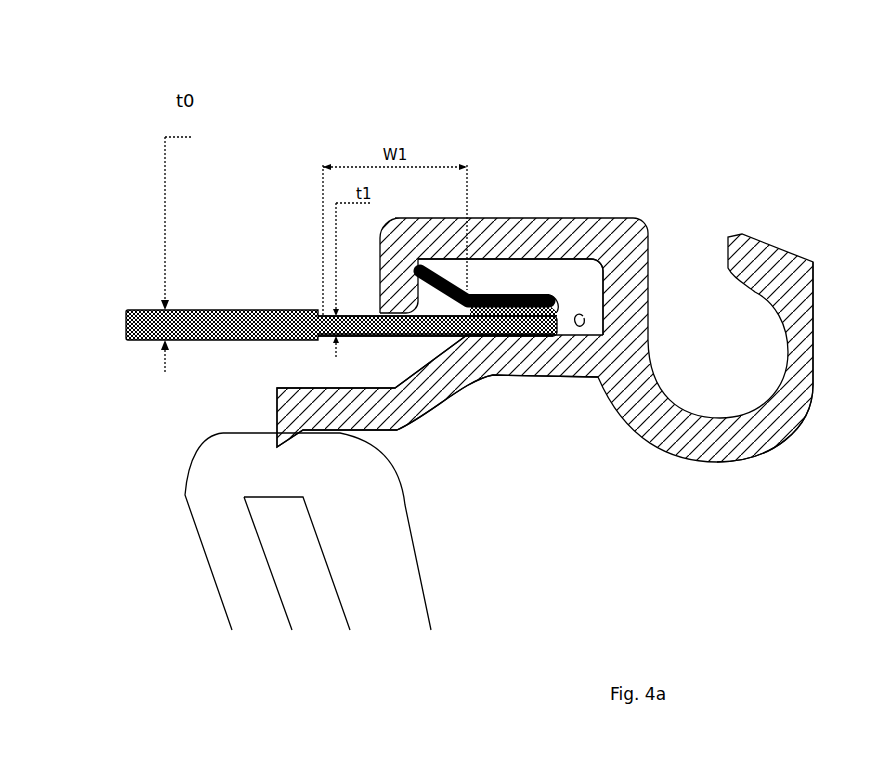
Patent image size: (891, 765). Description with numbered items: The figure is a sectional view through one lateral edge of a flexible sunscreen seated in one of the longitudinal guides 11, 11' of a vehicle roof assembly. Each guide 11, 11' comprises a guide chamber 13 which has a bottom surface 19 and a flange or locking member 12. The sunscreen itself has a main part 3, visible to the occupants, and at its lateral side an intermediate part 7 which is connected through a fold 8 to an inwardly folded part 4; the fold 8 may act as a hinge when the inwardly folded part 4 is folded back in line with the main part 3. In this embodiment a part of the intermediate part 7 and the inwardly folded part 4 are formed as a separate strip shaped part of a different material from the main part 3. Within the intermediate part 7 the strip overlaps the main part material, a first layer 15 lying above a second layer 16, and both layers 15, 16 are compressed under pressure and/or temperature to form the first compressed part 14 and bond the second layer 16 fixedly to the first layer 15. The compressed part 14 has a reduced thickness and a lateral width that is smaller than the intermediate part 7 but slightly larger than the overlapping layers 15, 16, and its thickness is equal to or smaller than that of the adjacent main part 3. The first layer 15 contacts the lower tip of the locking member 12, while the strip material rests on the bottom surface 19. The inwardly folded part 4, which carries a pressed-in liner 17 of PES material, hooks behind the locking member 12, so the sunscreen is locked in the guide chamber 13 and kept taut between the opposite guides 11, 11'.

The main part 3 is at (142, 308).
The inwardly folded part 4 is at (492, 290).
The intermediate part 7 is at (440, 337).
The fold 8 is at (557, 313).
The longitudinal guide 11 is at (564, 258).
The longitudinal guide 11' is at (743, 264).
The locking member 12 is at (397, 297).
The guide chamber 13 is at (480, 272).
The first compressed part 14 is at (410, 336).
The first layer 15 is at (363, 312).
The second layer 16 is at (390, 336).
The liner 17 is at (522, 297).
The bottom surface 19 is at (583, 318).